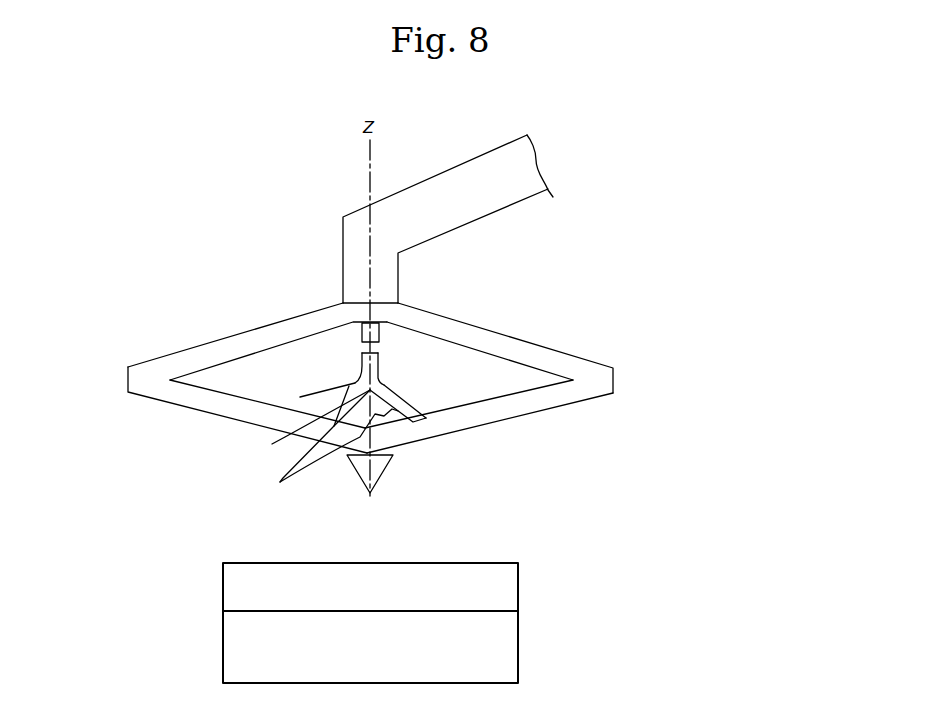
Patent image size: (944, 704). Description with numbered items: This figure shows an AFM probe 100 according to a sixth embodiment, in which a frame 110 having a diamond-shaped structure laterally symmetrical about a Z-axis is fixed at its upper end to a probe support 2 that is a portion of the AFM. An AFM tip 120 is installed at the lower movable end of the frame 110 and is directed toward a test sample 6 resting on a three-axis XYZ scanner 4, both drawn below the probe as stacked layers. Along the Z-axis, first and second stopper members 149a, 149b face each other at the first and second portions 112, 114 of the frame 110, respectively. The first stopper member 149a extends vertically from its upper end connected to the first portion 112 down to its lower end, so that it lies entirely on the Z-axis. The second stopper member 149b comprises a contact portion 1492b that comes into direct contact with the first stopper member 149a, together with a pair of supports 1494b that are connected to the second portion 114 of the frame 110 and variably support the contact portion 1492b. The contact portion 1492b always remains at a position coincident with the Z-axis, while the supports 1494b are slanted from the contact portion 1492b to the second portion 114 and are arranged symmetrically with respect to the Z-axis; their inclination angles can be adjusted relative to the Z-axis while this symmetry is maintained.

The probe support 2 is at (473, 161).
The AFM probe 100 is at (637, 288).
The frame 110 is at (468, 378).
The first portion 112 is at (590, 359).
The second portion 114 is at (593, 401).
The first stopper member 149a is at (387, 329).
The second stopper member 149b is at (300, 439).
The contact portion 1492b is at (300, 397).
The supports 1494b is at (323, 447).
The AFM tip 120 is at (383, 474).
The test sample 6 is at (518, 587).
The XYZ scanner 4 is at (518, 645).